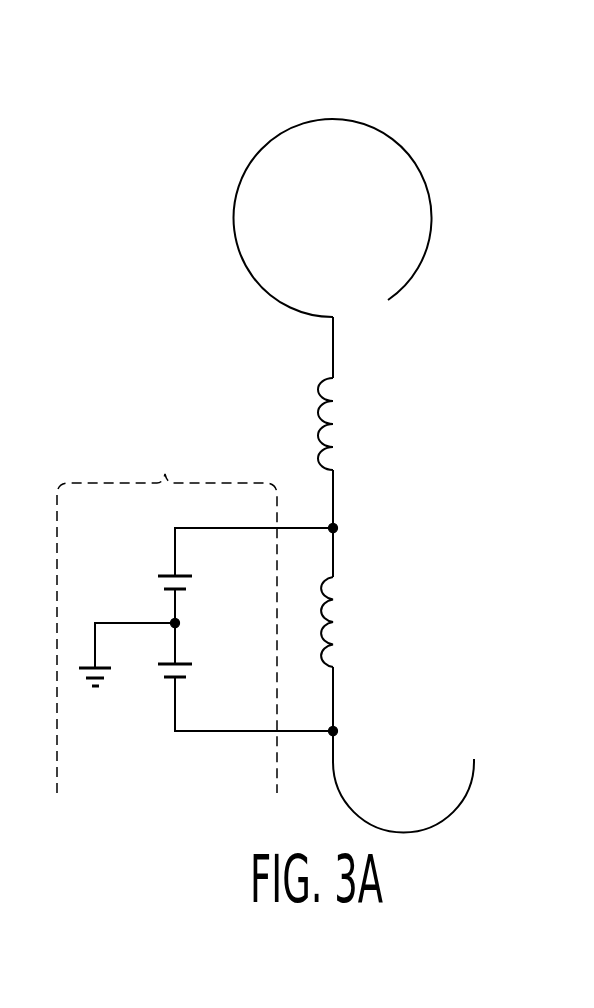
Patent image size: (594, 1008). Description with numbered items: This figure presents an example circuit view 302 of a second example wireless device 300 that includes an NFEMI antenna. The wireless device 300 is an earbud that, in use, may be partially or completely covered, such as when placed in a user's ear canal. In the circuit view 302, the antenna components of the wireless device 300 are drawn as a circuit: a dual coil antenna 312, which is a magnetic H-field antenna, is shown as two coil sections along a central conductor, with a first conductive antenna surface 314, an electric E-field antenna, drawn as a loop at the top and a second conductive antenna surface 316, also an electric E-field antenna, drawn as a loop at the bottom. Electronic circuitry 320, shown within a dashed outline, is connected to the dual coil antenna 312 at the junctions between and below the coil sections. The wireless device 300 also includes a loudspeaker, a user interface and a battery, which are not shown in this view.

The wireless device 300 is at (141, 122).
The circuit view 302 is at (281, 102).
The dual coil antenna 312 is at (317, 410).
The first conductive antenna surface 314 is at (422, 172).
The second conductive antenna surface 316 is at (476, 782).
The electronic circuitry 320 is at (195, 616).